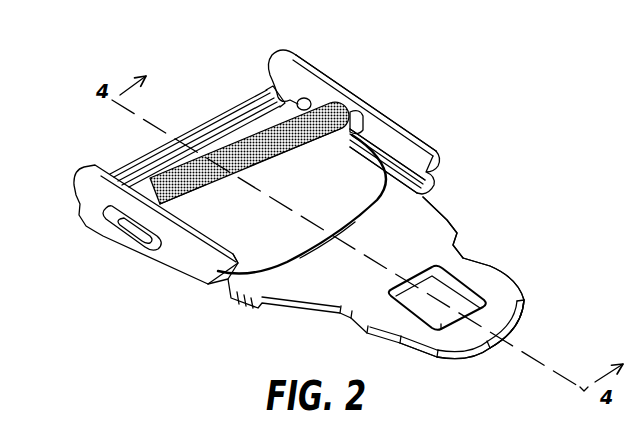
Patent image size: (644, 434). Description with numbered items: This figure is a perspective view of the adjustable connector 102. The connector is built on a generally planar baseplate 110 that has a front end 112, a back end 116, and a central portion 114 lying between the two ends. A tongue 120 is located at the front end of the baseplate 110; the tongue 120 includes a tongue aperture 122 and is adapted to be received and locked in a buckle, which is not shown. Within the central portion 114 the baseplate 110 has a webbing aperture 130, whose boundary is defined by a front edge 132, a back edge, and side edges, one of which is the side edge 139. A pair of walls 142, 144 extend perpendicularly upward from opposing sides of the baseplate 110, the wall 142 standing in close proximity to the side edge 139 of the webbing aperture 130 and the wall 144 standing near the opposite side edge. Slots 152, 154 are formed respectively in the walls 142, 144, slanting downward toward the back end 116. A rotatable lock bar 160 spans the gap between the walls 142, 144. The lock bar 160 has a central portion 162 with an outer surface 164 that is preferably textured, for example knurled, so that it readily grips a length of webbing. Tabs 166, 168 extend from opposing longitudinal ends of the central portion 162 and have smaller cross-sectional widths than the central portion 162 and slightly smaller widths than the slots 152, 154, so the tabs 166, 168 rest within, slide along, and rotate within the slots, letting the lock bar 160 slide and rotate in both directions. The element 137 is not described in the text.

The adjustable connector 102 is at (80, 101).
The baseplate 110 is at (457, 222).
The front end 112 is at (524, 317).
The central portion 114 is at (380, 222).
The back end 116 is at (207, 113).
The tongue 120 is at (504, 299).
The tongue aperture 122 is at (452, 294).
The webbing aperture 130 is at (302, 204).
The front edge 132 is at (322, 244).
The lower flange 137 is at (370, 161).
The side edge 139 is at (354, 145).
The wall 142 is at (379, 110).
The wall 144 is at (102, 168).
The slot 152 is at (306, 97).
The slot 154 is at (110, 212).
The rotatable lock bar 160 is at (267, 137).
The central portion 162 is at (208, 190).
The outer surface 164 is at (271, 155).
The tab 166 is at (360, 84).
The tab 168 is at (130, 233).